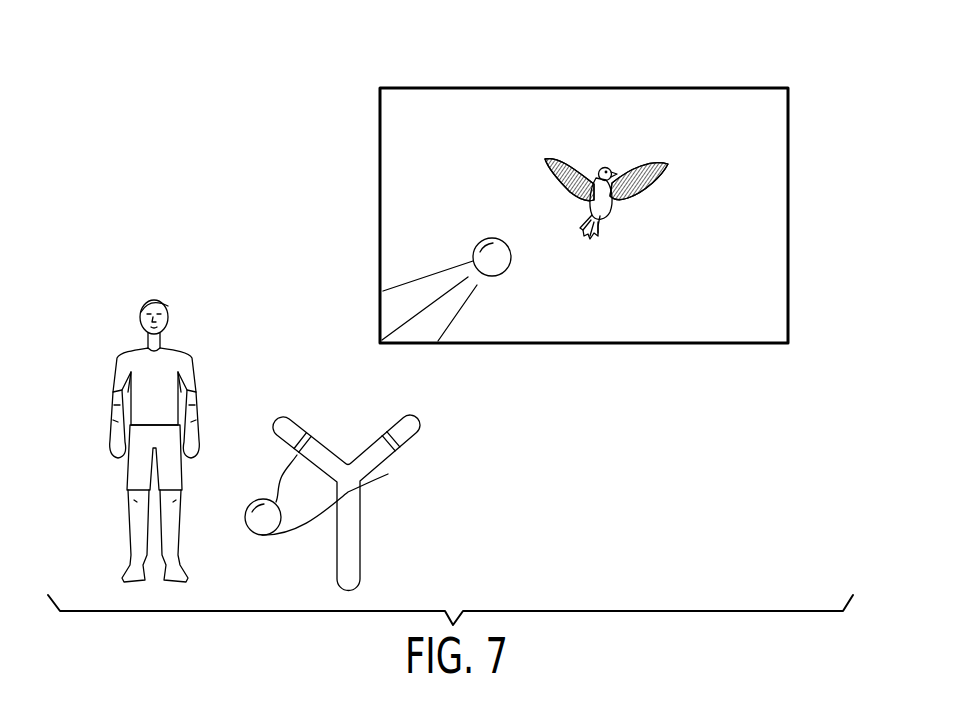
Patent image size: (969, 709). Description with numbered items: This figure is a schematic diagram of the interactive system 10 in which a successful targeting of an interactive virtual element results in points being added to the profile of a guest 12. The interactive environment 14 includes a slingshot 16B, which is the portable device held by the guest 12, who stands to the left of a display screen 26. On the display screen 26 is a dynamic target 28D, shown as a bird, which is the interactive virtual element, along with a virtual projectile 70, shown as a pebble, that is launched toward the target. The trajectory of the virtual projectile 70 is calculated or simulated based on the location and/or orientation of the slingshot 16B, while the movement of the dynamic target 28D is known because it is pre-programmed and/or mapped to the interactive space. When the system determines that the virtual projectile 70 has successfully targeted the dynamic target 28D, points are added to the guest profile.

The interactive system 10 is at (333, 59).
The guest 12 is at (168, 310).
The interactive environment 14 is at (262, 121).
The slingshot 16B is at (362, 543).
The display screen 26 is at (585, 87).
The dynamic target 28D is at (630, 169).
The virtual projectile 70 is at (512, 263).